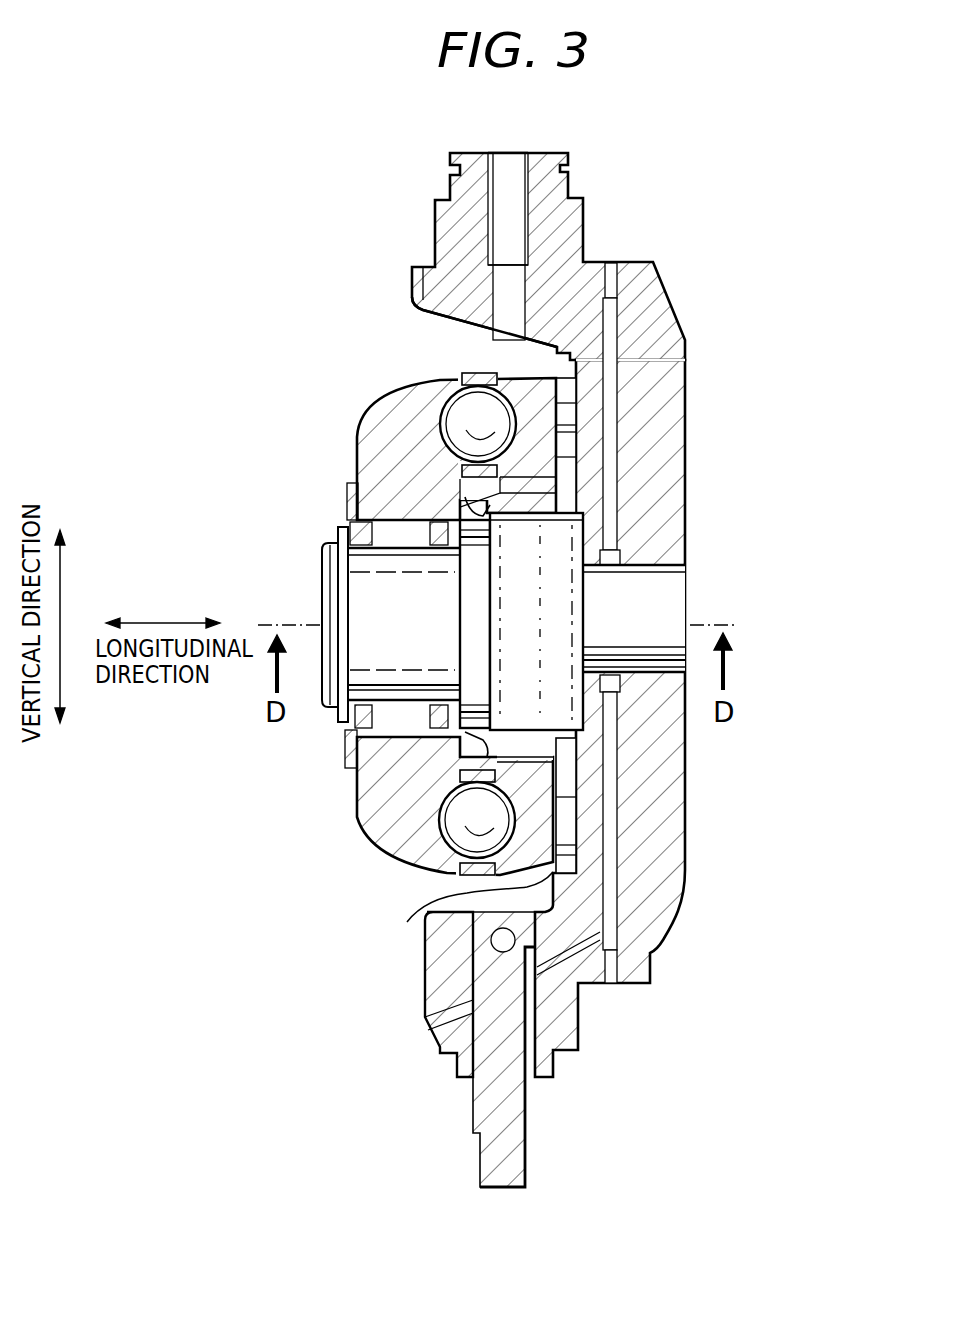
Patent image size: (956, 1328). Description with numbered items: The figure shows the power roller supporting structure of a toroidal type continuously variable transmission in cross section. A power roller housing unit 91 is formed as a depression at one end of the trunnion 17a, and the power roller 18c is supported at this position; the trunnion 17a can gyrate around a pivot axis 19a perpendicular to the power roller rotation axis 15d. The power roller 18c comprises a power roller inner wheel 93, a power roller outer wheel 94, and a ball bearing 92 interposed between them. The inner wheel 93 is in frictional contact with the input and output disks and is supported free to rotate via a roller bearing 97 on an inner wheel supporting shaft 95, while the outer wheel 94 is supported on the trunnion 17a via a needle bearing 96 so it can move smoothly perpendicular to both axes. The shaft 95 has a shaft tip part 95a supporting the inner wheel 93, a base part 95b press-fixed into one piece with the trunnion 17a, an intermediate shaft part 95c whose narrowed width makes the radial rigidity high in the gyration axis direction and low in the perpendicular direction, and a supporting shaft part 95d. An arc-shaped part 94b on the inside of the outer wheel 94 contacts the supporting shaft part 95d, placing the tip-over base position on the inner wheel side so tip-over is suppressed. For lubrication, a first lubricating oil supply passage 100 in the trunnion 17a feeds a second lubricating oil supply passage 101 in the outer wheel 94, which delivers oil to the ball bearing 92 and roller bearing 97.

The power roller rotation axis 15d is at (298, 623).
The trunnion 17a is at (643, 313).
The power roller 18c is at (345, 412).
The pivot axis 19a is at (493, 1117).
The power roller housing unit 91 is at (427, 322).
The ball bearing 92 is at (458, 837).
The power roller inner wheel 93 is at (373, 795).
The power roller outer wheel 94 is at (512, 867).
The arc-shaped part 94b is at (463, 517).
The inner wheel supporting shaft 95 is at (338, 546).
The shaft tip part 95a is at (337, 705).
The base part 95b is at (667, 594).
The intermediate shaft part 95c is at (576, 591).
The supporting shaft part 95d is at (470, 682).
The needle bearing 96 is at (565, 438).
The roller bearing 97 is at (393, 533).
The first lubricating oil supply passage 100 is at (607, 853).
The second lubricating oil supply passage 101 is at (523, 765).